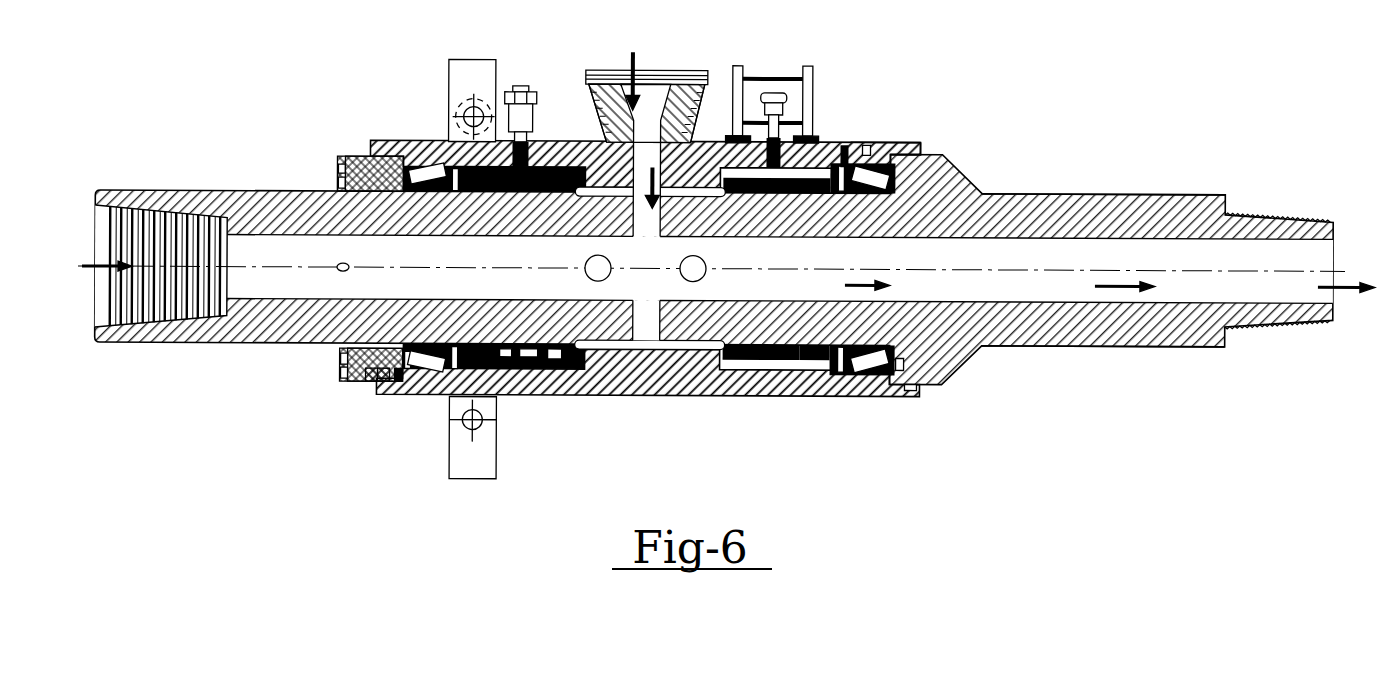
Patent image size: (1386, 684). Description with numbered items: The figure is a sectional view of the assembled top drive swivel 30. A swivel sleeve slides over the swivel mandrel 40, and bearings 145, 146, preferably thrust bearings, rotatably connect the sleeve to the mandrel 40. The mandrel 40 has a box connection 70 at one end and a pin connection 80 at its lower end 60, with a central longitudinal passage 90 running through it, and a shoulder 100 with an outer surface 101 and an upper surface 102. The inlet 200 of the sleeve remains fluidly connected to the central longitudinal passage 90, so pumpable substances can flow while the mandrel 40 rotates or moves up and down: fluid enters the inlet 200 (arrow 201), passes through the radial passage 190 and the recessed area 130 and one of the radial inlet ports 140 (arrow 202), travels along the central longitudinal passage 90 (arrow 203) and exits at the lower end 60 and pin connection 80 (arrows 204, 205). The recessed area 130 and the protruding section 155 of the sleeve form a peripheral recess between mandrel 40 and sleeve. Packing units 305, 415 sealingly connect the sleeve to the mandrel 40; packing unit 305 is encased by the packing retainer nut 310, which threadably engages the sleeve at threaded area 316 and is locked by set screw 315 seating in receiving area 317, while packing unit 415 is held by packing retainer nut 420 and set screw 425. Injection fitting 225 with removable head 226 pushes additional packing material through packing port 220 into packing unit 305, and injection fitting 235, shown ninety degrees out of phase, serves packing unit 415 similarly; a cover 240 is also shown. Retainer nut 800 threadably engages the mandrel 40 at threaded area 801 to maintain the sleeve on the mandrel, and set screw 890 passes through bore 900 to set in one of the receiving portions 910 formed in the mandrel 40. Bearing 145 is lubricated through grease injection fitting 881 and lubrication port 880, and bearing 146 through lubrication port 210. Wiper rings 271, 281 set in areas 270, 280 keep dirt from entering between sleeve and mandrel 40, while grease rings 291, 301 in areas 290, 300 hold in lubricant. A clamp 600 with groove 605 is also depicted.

The top drive swivel 30 is at (1104, 103).
The swivel mandrel 40 is at (190, 190).
The lower end 60 is at (1150, 196).
The box connection 70 is at (90, 225).
The pin connection 80 is at (1272, 213).
The central longitudinal passage 90 is at (424, 258).
The shoulder 100 is at (950, 373).
The outer surface of shoulder 101 is at (942, 152).
The upper surface of shoulder 102 is at (925, 148).
The recessed area 130 is at (608, 168).
The radial inlet ports 140 is at (585, 263).
The bearing 145 is at (428, 393).
The bearing 146 is at (863, 397).
The protruding section 155 is at (718, 185).
The radial passage 190 is at (647, 300).
The inlet 200 is at (665, 70).
The arrow 201 is at (630, 62).
The arrow 202 is at (626, 92).
The arrow 203 is at (860, 280).
The arrow 204 is at (1113, 282).
The peripheral groove 205 is at (1348, 290).
The lubrication port 210 is at (848, 141).
The packing port 220 is at (528, 134).
The injection fitting 225 is at (528, 98).
The head 226 is at (520, 88).
The injection fitting 235 is at (786, 105).
The cover 240 is at (818, 65).
The area for wiper ring 270 is at (383, 390).
The wiper ring 271 is at (370, 385).
The area for wiper ring 280 is at (915, 397).
The wiper ring 281 is at (930, 390).
The area for grease ring 290 is at (400, 392).
The grease ring 291 is at (410, 392).
The area for grease ring 300 is at (900, 398).
The grease ring 301 is at (886, 398).
The packing unit 305 is at (557, 396).
The packing retainer nut 310 is at (444, 140).
The set screw for packing retainer nut 315 is at (512, 400).
The threaded area 316 is at (460, 345).
The receiving area for set screw 317 is at (538, 400).
The packing unit 415 is at (757, 395).
The packing retainer nut 420 is at (872, 141).
The set screw for packing retainer nut 425 is at (823, 396).
The clamp 600 is at (471, 57).
The groove 605 is at (500, 402).
The retainer nut 800 is at (345, 165).
The threaded area 801 is at (365, 345).
The grease injection fitting / lubrication port 880 is at (352, 155).
The grease injection fitting 881 is at (338, 172).
The set screw 890 is at (345, 362).
The bore 900 is at (352, 382).
The receiving portions 910 is at (337, 264).